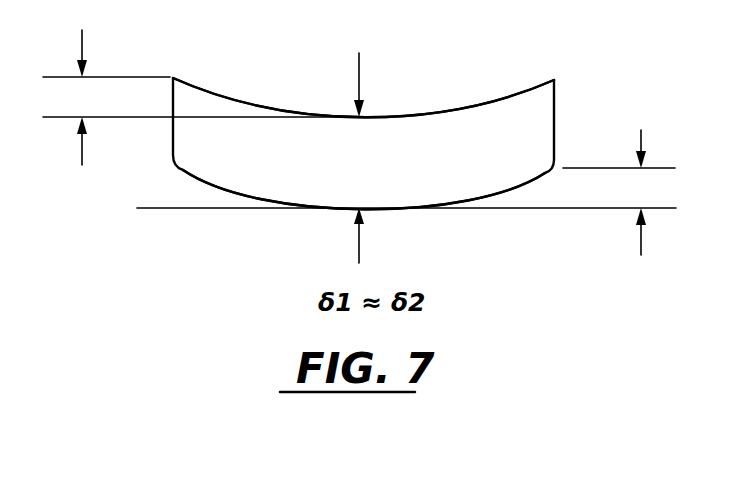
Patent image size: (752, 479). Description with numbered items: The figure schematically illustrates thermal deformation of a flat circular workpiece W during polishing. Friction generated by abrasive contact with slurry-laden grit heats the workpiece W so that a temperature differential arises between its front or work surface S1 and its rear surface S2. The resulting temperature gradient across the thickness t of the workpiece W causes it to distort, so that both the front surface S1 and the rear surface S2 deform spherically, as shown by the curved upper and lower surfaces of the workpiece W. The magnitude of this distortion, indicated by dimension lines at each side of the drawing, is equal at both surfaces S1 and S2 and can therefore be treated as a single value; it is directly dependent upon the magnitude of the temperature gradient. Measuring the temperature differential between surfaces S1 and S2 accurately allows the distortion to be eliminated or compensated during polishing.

The workpiece W is at (465, 108).
The front or work surface S1 is at (522, 189).
The rear surface S2 is at (302, 47).
The thickness of workpiece t is at (370, 157).